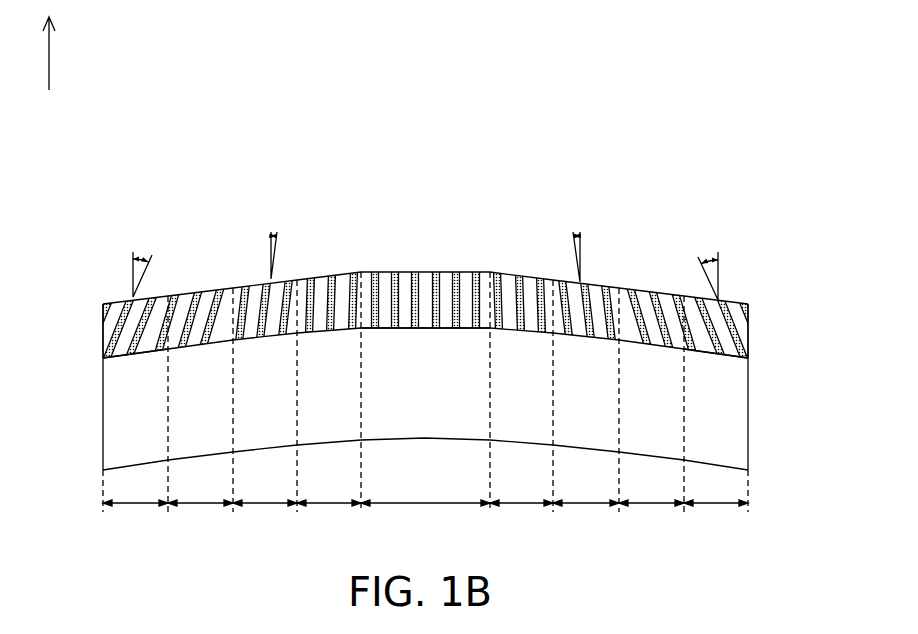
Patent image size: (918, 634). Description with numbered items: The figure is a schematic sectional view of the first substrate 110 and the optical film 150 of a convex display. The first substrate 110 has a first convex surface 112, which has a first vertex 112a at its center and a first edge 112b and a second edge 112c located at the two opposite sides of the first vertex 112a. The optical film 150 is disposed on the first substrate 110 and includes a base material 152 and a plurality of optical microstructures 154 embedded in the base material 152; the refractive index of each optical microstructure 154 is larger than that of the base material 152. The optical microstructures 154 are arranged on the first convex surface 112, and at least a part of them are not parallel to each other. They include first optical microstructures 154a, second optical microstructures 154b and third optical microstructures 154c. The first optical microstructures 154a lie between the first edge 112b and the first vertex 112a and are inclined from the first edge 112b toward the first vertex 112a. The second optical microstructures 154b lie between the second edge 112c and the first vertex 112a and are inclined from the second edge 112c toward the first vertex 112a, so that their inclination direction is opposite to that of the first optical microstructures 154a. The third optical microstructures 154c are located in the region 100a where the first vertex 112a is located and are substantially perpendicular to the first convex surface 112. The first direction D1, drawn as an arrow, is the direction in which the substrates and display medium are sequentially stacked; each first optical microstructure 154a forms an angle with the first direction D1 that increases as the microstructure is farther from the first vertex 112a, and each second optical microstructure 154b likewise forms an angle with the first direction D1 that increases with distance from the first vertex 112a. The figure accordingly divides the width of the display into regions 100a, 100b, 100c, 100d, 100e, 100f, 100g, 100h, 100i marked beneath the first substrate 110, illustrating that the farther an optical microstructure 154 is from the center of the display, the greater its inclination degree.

The first substrate 110 is at (722, 418).
The first convex surface 112 is at (145, 352).
The first vertex 112a is at (426, 326).
The first edge 112b is at (749, 359).
The second edge 112c is at (103, 358).
The optical film 150 is at (730, 335).
The base material 152 is at (342, 292).
The optical microstructures 154 is at (424, 246).
The first optical microstructures 154a is at (735, 306).
The second optical microstructures 154b is at (218, 315).
The third optical microstructures 154c is at (426, 300).
The region 100a is at (425, 407).
The region 100b is at (521, 411).
The region 100c is at (586, 415).
The region 100d is at (651, 419).
The region 100e is at (716, 506).
The region 100f is at (329, 411).
The region 100g is at (265, 415).
The region 100h is at (200, 419).
The region 100i is at (135, 506).
The first direction D1 is at (49, 45).